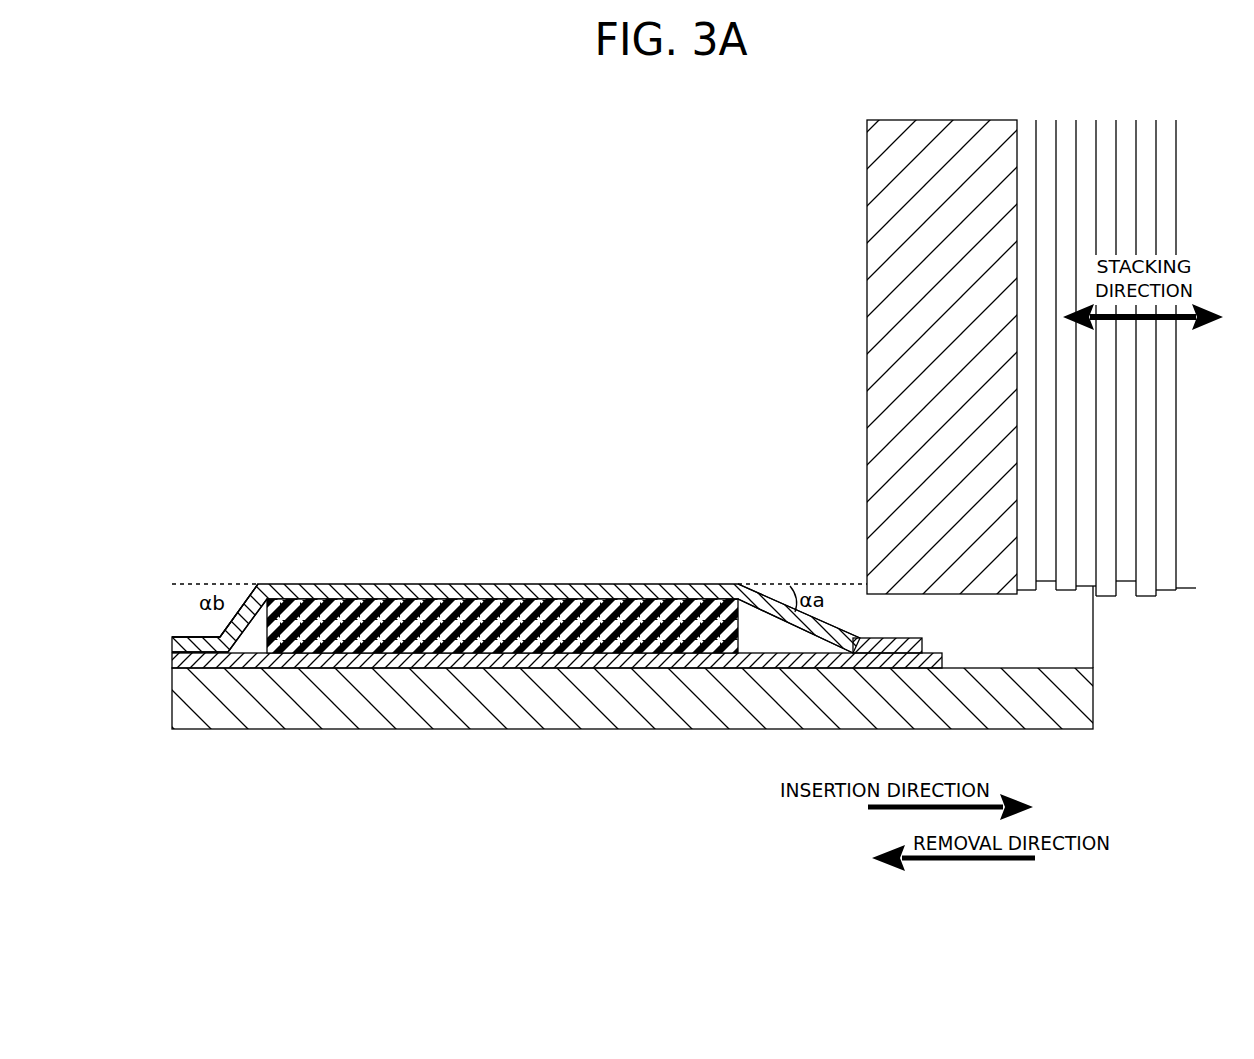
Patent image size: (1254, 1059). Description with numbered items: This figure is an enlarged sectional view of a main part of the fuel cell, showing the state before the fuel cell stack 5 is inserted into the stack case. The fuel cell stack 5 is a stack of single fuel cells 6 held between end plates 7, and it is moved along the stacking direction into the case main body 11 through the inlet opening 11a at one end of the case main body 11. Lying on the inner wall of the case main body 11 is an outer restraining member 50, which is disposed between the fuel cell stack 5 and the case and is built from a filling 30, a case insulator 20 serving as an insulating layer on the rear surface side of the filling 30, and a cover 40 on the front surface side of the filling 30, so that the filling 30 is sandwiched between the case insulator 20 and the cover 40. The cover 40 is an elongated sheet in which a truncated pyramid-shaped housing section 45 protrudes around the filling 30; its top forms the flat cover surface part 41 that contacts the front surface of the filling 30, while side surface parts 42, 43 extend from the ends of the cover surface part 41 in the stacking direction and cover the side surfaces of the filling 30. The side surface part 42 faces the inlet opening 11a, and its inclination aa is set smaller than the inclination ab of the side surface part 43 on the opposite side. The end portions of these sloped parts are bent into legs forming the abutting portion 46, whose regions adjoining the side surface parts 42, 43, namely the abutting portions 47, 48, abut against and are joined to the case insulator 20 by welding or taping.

The end plate 7 is at (867, 260).
The fuel cell stack 5 is at (1142, 600).
The single fuel cell 6 is at (1114, 394).
The case main body 11 is at (522, 690).
The inlet opening 11a is at (1093, 668).
The case insulator 20 is at (410, 660).
The filling 30 is at (488, 630).
The cover 40 is at (202, 645).
The abutting portion 46 is at (184, 707).
The cover surface part 41 is at (516, 583).
The housing section 45 is at (583, 592).
The side surface part 43 is at (250, 618).
The abutting portion 48 is at (185, 640).
The side surface part 42 is at (800, 623).
The abutting portion 47 is at (885, 643).
The outer restraining member 50 is at (950, 618).